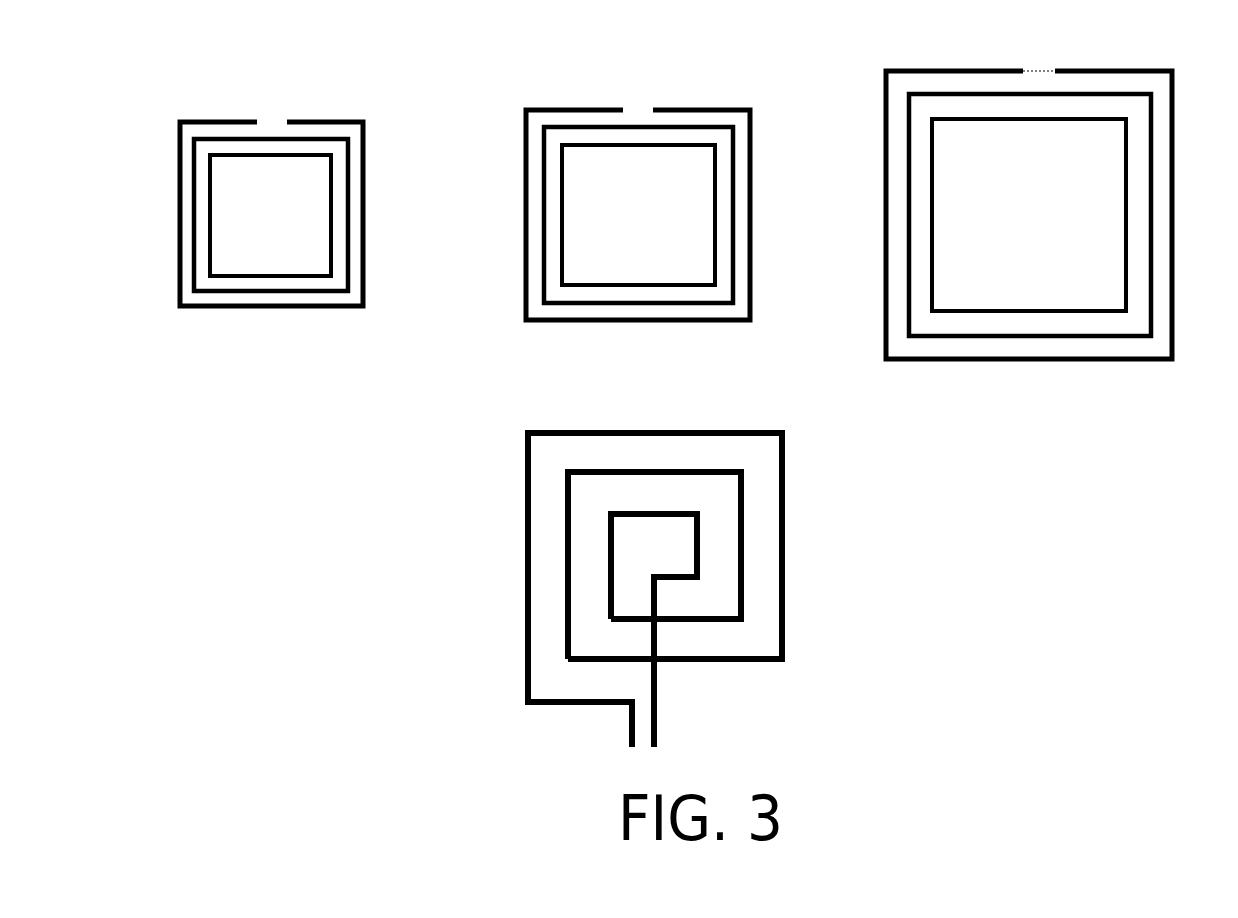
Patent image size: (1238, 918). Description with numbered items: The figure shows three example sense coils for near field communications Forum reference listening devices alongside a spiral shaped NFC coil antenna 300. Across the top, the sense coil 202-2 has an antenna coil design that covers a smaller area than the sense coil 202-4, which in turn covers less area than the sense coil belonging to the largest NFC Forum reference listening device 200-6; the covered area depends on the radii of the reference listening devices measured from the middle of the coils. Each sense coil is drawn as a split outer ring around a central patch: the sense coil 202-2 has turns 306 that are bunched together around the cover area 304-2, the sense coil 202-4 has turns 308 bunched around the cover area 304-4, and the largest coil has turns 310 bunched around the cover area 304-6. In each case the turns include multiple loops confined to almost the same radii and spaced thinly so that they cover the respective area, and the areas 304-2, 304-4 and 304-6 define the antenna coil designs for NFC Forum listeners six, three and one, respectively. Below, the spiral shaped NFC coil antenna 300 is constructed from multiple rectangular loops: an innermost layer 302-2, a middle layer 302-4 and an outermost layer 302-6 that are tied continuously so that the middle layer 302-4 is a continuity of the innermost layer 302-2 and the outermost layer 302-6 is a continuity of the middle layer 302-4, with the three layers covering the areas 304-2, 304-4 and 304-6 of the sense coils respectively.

The sense coil 202-2 is at (201, 92).
The sense coil 202-4 is at (547, 83).
The NFC Forum reference listening device 200-6 is at (868, 83).
The cover area 304-2 is at (270, 215).
The cover area 304-4 is at (638, 215).
The cover area 304-6 is at (1029, 215).
The turns 306 is at (177, 250).
The turns 308 is at (525, 262).
The turns 310 is at (885, 248).
The spiral shaped NFC coil antenna 300 is at (588, 559).
The innermost layer 302-2 is at (610, 530).
The middle layer 302-4 is at (568, 585).
The outermost layer 302-6 is at (523, 620).